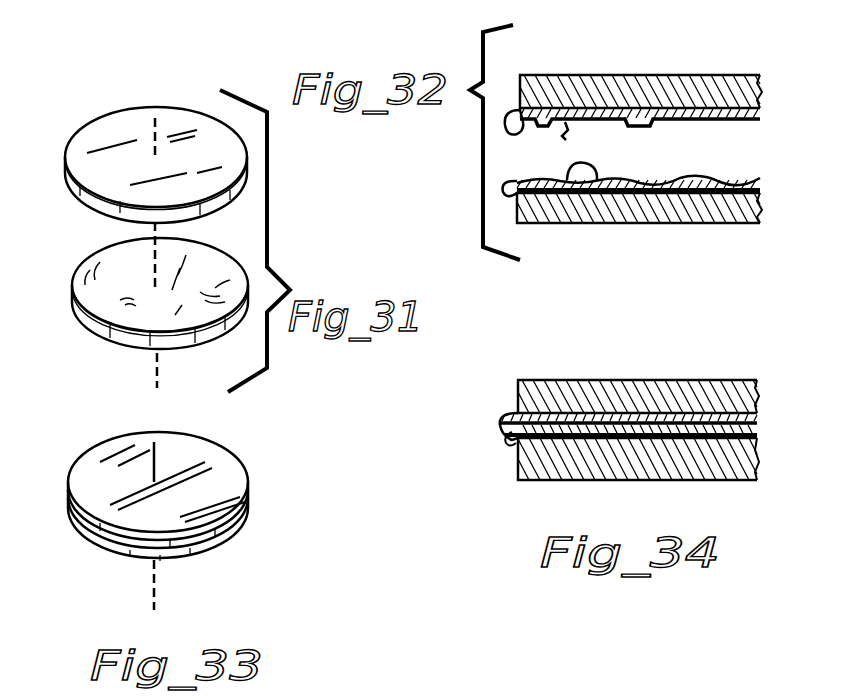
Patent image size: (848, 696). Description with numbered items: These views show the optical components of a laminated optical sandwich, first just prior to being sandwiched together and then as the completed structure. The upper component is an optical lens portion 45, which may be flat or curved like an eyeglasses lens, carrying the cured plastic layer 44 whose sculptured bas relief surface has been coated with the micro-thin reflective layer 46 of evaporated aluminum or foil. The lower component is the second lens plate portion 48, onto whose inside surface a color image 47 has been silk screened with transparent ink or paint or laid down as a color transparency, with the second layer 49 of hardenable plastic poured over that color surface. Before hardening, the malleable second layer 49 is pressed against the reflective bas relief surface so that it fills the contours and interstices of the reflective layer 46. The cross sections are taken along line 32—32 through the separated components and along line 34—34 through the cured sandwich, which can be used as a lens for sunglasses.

In FIG. 31, the cured plastic layer 44 is at (88, 197).
In FIG. 32, the cured plastic layer 44 is at (690, 110).
In FIG. 33, the cured plastic layer 44 is at (247, 500).
In FIG. 34, the cured plastic layer 44 is at (610, 420).
In FIG. 31, the optical lens portion 45 is at (173, 123).
In FIG. 32, the optical lens portion 45 is at (637, 35).
In FIG. 33, the optical lens portion 45 is at (227, 462).
In FIG. 34, the optical lens portion 45 is at (543, 392).
In FIG. 32, the micro-thin reflective layer 46 is at (566, 141).
In FIG. 34, the micro-thin reflective layer 46 is at (697, 427).
In FIG. 32, the color image 47 is at (643, 186).
In FIG. 34, the color image 47 is at (627, 430).
In FIG. 31, the second lens plate portion 48 is at (77, 313).
In FIG. 32, the second lens plate portion 48 is at (690, 213).
In FIG. 33, the second lens plate portion 48 is at (207, 550).
In FIG. 34, the second lens plate portion 48 is at (717, 453).
In FIG. 31, the second layer 49 is at (123, 265).
In FIG. 32, the second layer 49 is at (560, 188).
In FIG. 33, the second layer 49 is at (240, 520).
In FIG. 34, the second layer 49 is at (530, 453).
In FIG. 31, the line 32— 32 is at (158, 136).
In FIG. 33, the line 34— 34 is at (163, 462).